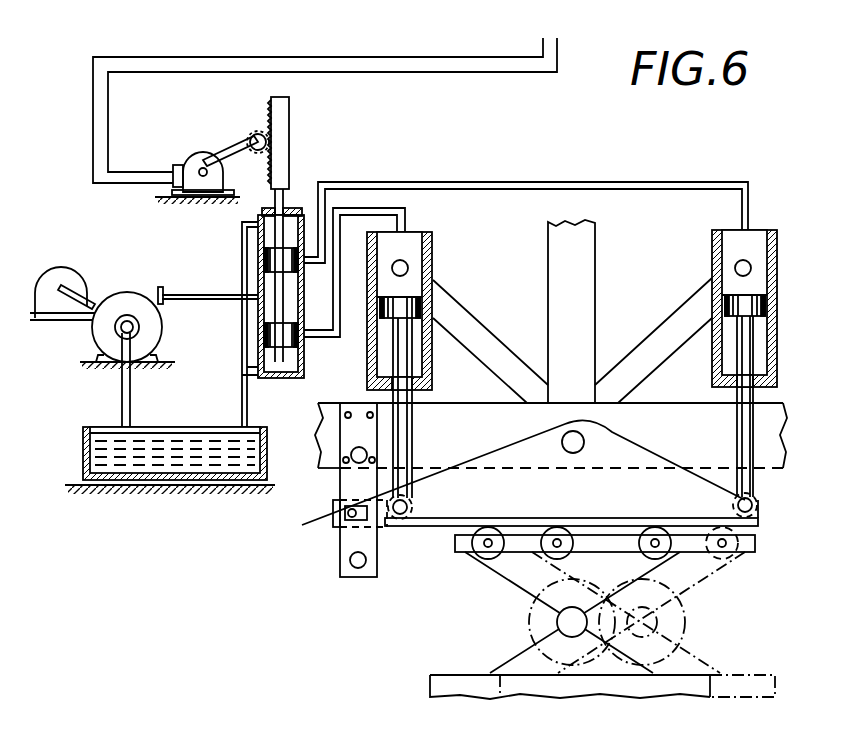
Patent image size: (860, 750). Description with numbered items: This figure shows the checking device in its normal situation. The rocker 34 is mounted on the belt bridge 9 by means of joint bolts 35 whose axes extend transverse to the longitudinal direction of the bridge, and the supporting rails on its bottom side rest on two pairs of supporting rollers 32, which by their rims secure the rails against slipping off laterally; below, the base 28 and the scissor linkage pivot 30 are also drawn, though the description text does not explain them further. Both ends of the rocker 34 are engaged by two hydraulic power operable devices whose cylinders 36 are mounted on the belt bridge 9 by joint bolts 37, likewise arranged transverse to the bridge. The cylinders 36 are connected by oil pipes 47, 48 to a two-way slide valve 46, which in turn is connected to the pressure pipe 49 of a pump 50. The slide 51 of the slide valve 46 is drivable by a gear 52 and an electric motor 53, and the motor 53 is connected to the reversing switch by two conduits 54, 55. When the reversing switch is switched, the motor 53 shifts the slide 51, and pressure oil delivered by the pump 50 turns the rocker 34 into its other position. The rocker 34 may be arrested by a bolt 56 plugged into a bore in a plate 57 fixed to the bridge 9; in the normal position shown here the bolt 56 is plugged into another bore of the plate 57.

The belt bridge 9 is at (546, 283).
The base 28 is at (445, 685).
The scissor linkage pivot 30 is at (568, 625).
The supporting rollers 32 is at (490, 540).
The rocker 34 is at (448, 497).
The joint bolts 35 is at (578, 441).
The cylinders 36 is at (367, 372).
The joint bolts 37 is at (388, 292).
The two-way slide valve 46 is at (262, 213).
The oil pipe 47 is at (380, 209).
The oil pipe 48 is at (667, 182).
The pressure pipe 49 is at (197, 298).
The pump 50 is at (100, 336).
The slide 51 is at (283, 200).
The gear 52 is at (255, 129).
The electric motor 53 is at (202, 153).
The conduit 54 is at (470, 73).
The conduit 55 is at (450, 56).
The bolt 56 is at (345, 512).
The plate 57 is at (340, 562).